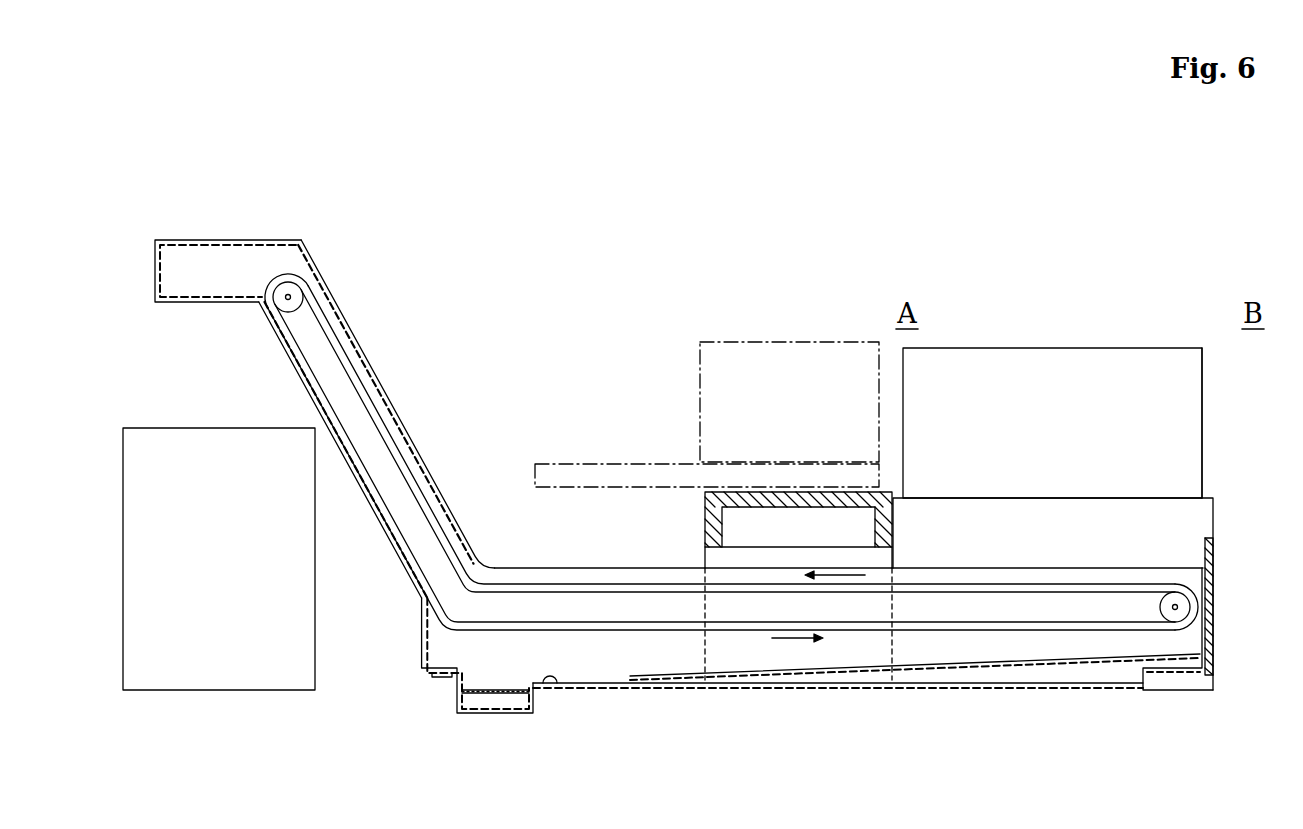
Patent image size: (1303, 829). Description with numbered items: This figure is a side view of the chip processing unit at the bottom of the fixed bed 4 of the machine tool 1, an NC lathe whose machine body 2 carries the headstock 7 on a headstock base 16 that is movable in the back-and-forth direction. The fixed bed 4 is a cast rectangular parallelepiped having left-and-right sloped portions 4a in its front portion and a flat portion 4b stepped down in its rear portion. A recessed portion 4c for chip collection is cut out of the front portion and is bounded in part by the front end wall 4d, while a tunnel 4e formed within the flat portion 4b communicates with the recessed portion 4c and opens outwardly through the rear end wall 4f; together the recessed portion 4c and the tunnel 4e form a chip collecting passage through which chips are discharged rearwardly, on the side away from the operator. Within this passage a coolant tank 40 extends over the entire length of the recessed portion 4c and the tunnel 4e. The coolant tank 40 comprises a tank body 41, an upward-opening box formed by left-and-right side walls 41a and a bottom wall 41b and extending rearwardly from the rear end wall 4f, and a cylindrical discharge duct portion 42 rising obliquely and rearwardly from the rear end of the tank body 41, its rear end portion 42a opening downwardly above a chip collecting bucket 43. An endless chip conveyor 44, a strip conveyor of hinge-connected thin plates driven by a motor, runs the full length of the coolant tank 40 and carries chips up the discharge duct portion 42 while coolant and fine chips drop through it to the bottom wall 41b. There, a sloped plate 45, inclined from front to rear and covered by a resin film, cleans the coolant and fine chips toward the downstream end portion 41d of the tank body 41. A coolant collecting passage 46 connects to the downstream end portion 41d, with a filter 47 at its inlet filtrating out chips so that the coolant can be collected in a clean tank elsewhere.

The machine tool 1 is at (1134, 208).
The machine body 2 is at (1210, 338).
The fixed bed 4 is at (953, 550).
The sloped portions 4a is at (1203, 387).
The flat portion 4b is at (765, 492).
The recessed portion 4c is at (1213, 522).
The front end wall 4d is at (1213, 590).
The tunnel 4e is at (715, 557).
The rear end wall 4f is at (705, 505).
The headstock 7 is at (750, 342).
The headstock base 16 is at (650, 464).
The coolant tank 40 is at (443, 418).
The tank body 41 is at (798, 584).
The side walls 41a is at (948, 579).
The bottom wall 41b is at (1020, 690).
The downstream end portion 41d is at (558, 690).
The discharge duct portion 42 is at (325, 390).
The rear end portion 42a is at (183, 241).
The chip collecting bucket 43 is at (315, 582).
The chip conveyor 44 is at (1067, 583).
The sloped plate 45 is at (970, 656).
The coolant collecting passage 46 is at (457, 698).
The filter 47 is at (520, 700).